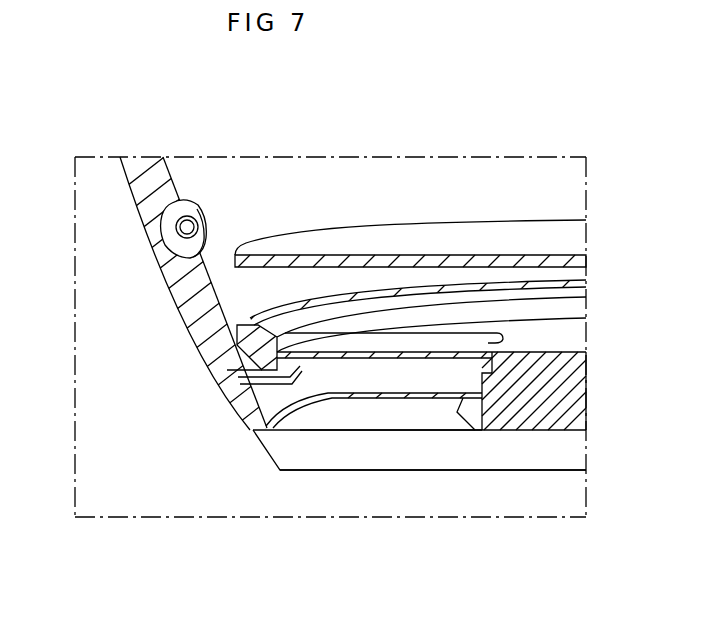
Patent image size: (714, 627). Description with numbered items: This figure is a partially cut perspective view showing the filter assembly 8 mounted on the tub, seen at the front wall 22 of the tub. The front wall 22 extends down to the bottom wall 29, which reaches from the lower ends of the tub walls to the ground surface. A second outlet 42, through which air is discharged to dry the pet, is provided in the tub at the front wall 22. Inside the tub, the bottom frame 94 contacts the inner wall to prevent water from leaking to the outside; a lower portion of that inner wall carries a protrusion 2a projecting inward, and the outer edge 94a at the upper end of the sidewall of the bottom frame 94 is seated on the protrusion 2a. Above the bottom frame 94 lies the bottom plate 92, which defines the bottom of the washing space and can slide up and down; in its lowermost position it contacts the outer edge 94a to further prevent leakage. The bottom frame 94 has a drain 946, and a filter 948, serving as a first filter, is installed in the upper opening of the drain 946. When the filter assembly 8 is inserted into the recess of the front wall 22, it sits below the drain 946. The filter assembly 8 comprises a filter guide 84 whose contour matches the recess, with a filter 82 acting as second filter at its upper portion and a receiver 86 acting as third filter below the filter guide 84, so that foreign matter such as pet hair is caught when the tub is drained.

The second outlet 42 is at (157, 203).
The bottom plate 92 is at (276, 252).
The front wall 22 is at (170, 270).
The outer edge 94a is at (245, 316).
The bottom frame 94 is at (242, 341).
The protrusion 2a is at (232, 362).
The filter assembly 8 is at (204, 400).
The filter guide 84 is at (233, 423).
The bottom wall 29 is at (286, 452).
The receiver 86 is at (324, 426).
The filter 82 is at (360, 383).
The filter 948 is at (410, 350).
The drain 946 is at (495, 342).